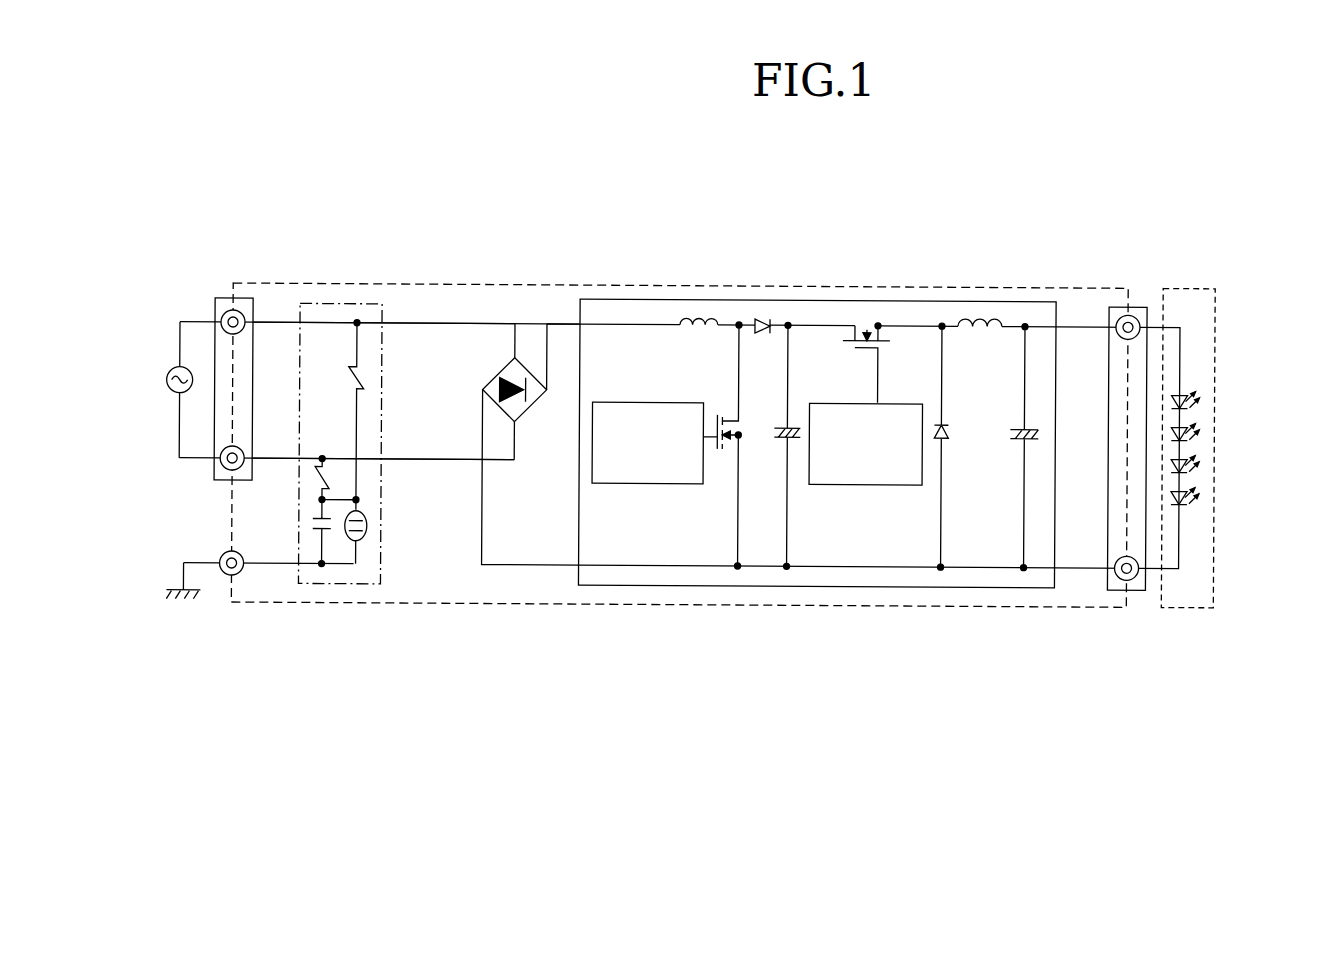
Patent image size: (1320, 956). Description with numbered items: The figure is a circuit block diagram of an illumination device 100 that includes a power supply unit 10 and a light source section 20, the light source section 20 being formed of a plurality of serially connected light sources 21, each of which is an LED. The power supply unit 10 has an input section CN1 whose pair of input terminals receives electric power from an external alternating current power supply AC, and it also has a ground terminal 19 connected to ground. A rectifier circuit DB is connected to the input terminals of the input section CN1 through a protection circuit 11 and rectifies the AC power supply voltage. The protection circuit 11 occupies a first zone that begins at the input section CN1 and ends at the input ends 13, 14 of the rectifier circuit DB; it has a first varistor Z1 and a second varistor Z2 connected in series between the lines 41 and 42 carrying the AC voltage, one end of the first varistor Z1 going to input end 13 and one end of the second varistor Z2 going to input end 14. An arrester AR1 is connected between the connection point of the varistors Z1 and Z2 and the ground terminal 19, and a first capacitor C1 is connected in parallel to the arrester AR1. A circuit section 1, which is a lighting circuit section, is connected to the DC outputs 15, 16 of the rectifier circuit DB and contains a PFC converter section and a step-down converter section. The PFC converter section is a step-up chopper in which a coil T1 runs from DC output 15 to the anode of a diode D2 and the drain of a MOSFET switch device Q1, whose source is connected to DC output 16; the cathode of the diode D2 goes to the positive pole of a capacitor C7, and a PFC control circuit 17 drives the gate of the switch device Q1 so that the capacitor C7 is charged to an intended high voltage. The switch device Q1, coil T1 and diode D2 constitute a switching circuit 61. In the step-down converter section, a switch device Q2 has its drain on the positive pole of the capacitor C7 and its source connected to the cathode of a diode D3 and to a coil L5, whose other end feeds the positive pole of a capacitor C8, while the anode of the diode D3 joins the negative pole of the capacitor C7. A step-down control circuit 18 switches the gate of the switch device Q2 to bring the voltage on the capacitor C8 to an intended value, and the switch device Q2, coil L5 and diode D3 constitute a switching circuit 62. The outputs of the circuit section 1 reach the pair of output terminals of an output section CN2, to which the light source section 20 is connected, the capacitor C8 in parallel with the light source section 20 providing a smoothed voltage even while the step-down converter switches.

The illumination device 100 is at (219, 196).
The power supply unit 10 is at (317, 284).
The protection circuit 11 is at (346, 301).
The circuit section 1 is at (840, 297).
The input end 13 is at (521, 330).
The input end 14 is at (517, 453).
The DC output 15 is at (551, 347).
The DC output 16 is at (482, 545).
The PFC control circuit 17 is at (641, 482).
The step-down control circuit 18 is at (870, 482).
The ground terminal 19 is at (224, 554).
The light source section 20 is at (1198, 283).
The light source 21 is at (1190, 394).
The line 41 is at (280, 321).
The line 42 is at (283, 457).
The switching circuit 61 is at (802, 214).
The switching circuit 62 is at (1037, 213).
The alternating current power supply AC is at (169, 372).
The input section CN1 is at (216, 298).
The output section CN2 is at (1128, 302).
The first varistor Z1 is at (366, 380).
The second varistor Z2 is at (313, 478).
The first capacitor C1 is at (312, 525).
The arrester AR1 is at (368, 525).
The rectifier circuit DB is at (494, 372).
The coil T1 is at (690, 312).
The switch device Q1 is at (722, 410).
The diode D2 is at (763, 314).
The capacitor C7 is at (777, 438).
The switch device Q2 is at (867, 322).
The diode D3 is at (942, 414).
The coil L5 is at (982, 310).
The capacitor C8 is at (1027, 438).